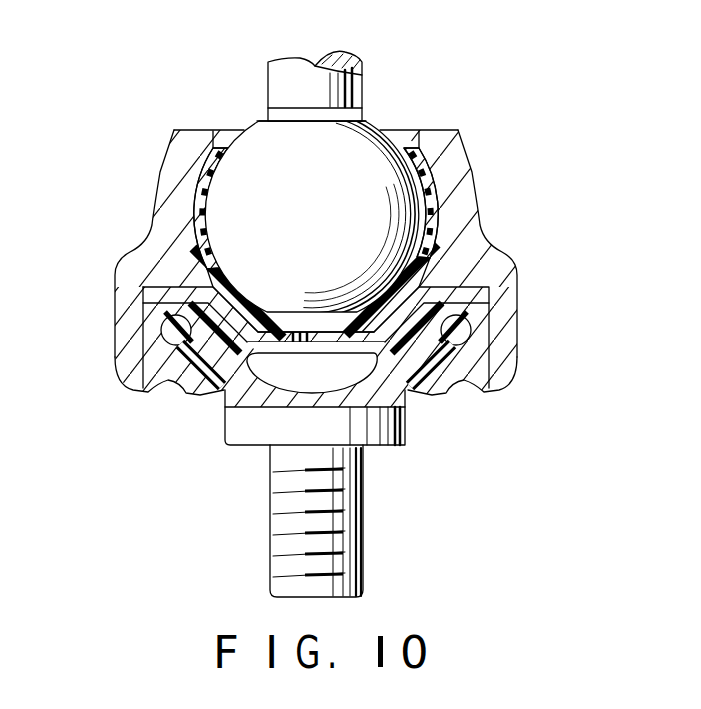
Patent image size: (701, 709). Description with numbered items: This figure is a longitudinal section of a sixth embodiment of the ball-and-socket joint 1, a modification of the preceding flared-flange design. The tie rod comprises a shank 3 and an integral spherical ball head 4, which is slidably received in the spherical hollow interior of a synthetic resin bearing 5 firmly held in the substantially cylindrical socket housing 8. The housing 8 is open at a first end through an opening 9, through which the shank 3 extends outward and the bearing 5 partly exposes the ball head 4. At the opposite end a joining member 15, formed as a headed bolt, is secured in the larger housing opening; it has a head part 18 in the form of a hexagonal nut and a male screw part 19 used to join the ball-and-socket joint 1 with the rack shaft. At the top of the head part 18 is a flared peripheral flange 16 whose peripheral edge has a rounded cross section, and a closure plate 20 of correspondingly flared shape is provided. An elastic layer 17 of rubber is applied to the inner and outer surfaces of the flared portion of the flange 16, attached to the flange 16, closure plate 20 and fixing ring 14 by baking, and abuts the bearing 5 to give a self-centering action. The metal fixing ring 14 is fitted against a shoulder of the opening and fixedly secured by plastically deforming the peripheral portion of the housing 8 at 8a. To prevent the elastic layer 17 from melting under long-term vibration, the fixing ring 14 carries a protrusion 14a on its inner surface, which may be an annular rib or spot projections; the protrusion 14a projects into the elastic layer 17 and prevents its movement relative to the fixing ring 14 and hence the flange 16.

The ball-and-socket joint 1 is at (503, 116).
The shank 3 is at (362, 85).
The ball head 4 is at (273, 143).
The bearing 5 is at (430, 187).
The socket housing 8 is at (487, 238).
The plastically deformed peripheral portion 8a is at (143, 393).
The opening 9 is at (215, 131).
The fixing ring 14 is at (153, 331).
The protrusion 14a is at (147, 370).
The joining member 15 is at (370, 513).
The peripheral flange 16 is at (432, 333).
The elastic layer 17 is at (470, 314).
The head part 18 is at (408, 425).
The male screw part 19 is at (278, 537).
The closure plate 20 is at (478, 292).